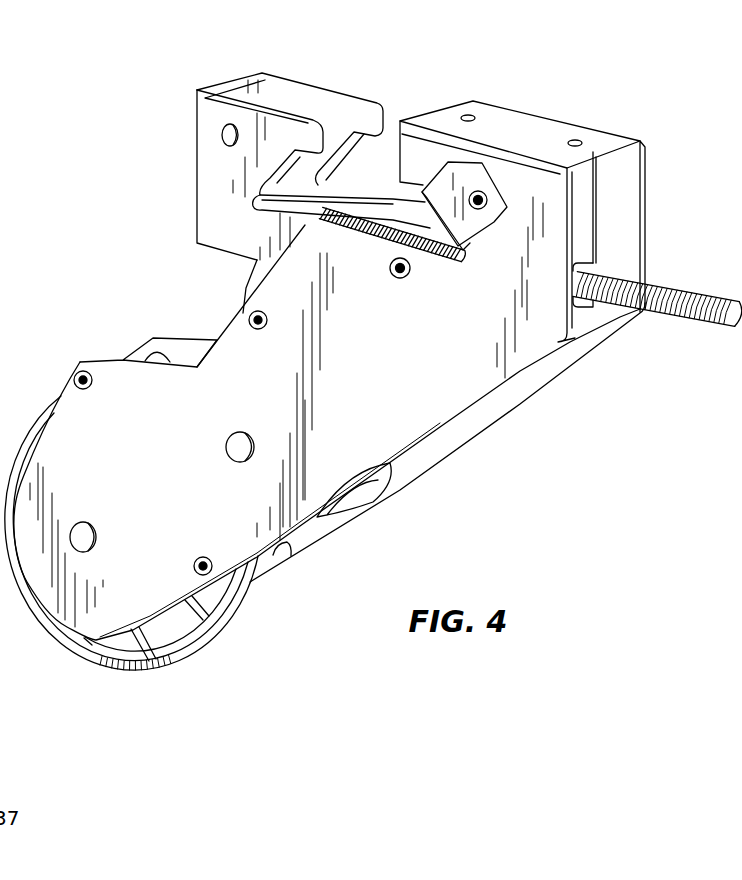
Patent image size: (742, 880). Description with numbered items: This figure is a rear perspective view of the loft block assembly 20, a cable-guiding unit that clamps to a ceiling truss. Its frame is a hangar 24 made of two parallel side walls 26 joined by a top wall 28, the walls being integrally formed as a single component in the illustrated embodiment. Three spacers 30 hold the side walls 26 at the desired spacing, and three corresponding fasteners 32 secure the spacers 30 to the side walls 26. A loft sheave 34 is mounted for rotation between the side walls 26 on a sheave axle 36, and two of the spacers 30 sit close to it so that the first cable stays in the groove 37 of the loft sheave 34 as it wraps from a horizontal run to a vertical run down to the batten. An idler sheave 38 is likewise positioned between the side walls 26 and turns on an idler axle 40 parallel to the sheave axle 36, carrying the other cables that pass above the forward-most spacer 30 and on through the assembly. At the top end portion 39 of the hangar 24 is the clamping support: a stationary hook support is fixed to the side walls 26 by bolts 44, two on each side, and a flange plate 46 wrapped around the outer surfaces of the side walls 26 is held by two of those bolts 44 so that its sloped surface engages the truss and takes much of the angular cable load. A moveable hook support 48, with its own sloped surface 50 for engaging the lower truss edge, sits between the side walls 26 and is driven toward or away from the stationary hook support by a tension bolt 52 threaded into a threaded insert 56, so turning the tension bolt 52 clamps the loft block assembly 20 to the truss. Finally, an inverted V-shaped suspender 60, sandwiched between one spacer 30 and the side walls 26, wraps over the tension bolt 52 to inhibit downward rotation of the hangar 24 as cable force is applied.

The loft block assembly 20 is at (637, 92).
The hangar 24 is at (431, 443).
The side walls 26 is at (460, 385).
The top wall 28 is at (534, 128).
The spacers 30 is at (152, 355).
The fasteners 32 is at (80, 373).
The loft sheave 34 is at (118, 672).
The sheave axle 36 is at (82, 527).
The groove 37 is at (223, 640).
The idler sheave 38 is at (355, 510).
The top end portion 39 is at (648, 185).
The idler axle 40 is at (236, 448).
The bolts 44 is at (488, 194).
The flange plate 46 is at (471, 246).
The moveable hook support 48 is at (207, 122).
The sloped surface 50 is at (255, 200).
The tension bolt 52 is at (665, 297).
The threaded insert 56 is at (580, 263).
The suspender 60 is at (318, 203).